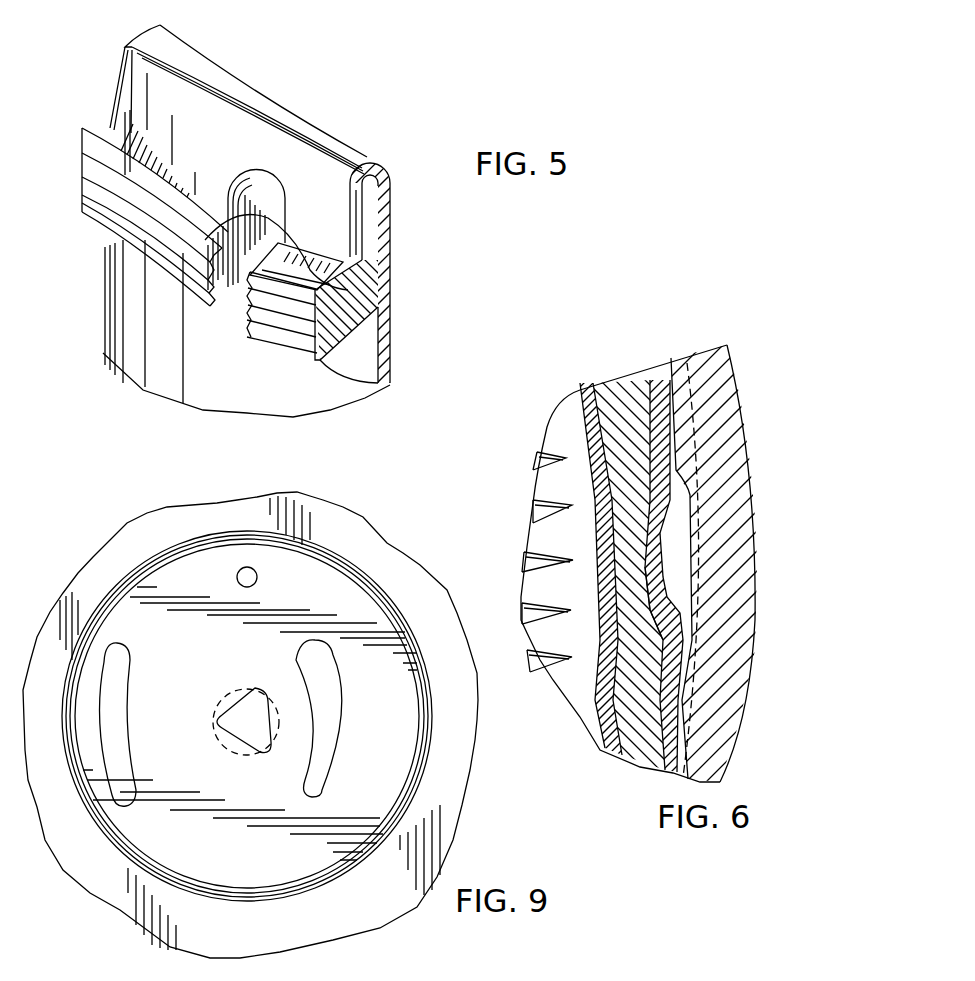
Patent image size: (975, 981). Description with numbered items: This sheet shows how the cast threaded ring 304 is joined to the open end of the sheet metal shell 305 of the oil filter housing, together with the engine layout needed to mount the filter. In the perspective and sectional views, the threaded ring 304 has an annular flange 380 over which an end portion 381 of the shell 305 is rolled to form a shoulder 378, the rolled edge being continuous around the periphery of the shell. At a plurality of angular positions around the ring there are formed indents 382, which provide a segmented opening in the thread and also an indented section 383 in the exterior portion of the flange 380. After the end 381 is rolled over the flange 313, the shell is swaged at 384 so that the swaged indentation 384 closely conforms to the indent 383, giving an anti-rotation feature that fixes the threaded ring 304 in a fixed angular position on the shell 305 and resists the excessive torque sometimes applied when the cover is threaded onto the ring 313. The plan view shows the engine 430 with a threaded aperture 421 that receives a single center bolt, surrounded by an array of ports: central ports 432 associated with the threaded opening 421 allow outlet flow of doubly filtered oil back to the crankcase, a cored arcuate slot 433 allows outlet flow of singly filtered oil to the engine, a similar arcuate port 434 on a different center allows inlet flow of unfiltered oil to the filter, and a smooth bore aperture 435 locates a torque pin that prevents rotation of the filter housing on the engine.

In FIG. 5, the shoulder 378 is at (188, 68).
In FIG. 5, the indented section 383 is at (248, 175).
In FIG. 6, the indented section 383 is at (663, 543).
In FIG. 5, the end portion 381 is at (323, 187).
In FIG. 6, the end portion 381 is at (673, 437).
In FIG. 5, the annular flange 380 is at (368, 152).
In FIG. 5, the threaded ring 304 is at (370, 240).
In FIG. 6, the threaded ring 304 is at (628, 410).
In FIG. 5, the swaged indentation 384 is at (337, 283).
In FIG. 6, the swaged indentation 384 is at (663, 569).
In FIG. 5, the sheet metal shell 305 is at (390, 333).
In FIG. 6, the sheet metal shell 305 is at (560, 474).
In FIG. 5, the ring 313 is at (297, 323).
In FIG. 5, the indents 382 is at (217, 290).
In FIG. 9, the engine 430 is at (360, 597).
In FIG. 9, the smooth bore aperture 435 is at (237, 573).
In FIG. 9, the central ports 432 is at (265, 690).
In FIG. 9, the threaded aperture 421 is at (232, 742).
In FIG. 9, the arcuate port 434 is at (124, 794).
In FIG. 9, the cored arcuate slot 433 is at (312, 784).